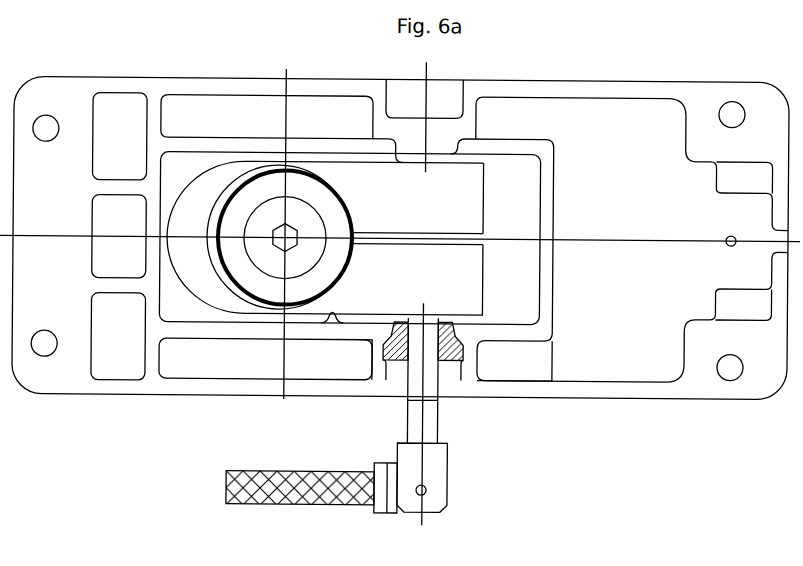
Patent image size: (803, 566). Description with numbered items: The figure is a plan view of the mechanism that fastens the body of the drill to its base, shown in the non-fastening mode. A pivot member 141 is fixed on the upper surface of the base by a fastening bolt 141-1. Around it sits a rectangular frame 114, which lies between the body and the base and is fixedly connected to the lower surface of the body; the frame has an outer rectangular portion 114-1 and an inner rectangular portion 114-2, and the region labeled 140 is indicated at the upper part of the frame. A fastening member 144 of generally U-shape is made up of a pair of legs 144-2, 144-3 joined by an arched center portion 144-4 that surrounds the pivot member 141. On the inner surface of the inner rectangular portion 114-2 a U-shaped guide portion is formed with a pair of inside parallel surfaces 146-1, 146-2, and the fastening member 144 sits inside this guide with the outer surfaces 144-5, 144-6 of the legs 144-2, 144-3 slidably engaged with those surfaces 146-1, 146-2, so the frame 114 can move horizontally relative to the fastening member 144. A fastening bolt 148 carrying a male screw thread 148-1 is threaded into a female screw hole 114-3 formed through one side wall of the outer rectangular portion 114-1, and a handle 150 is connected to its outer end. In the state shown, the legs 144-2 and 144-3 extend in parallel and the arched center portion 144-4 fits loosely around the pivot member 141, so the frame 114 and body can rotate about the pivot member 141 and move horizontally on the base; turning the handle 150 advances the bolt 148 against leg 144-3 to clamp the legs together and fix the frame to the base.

The rectangular frame 114 is at (196, 78).
The outer rectangular portion 114-1 is at (611, 90).
The inner rectangular portion 114-2 is at (193, 341).
The female screw hole 114-3 is at (410, 345).
The recess 140 is at (176, 168).
The pivot member 141 is at (237, 261).
The fastening bolt 141-1 is at (268, 262).
The fastening member 144 is at (363, 152).
The leg 144-2 is at (468, 196).
The leg 144-3 is at (473, 290).
The arched center portion 144-4 is at (250, 172).
The outer surface 144-5 is at (435, 165).
The outer surface 144-6 is at (365, 342).
The inside parallel surface 146-1 is at (313, 167).
The inside parallel surface 146-2 is at (333, 318).
The fastening bolt 148 is at (437, 421).
The male screw thread 148-1 is at (441, 381).
The handle 150 is at (285, 495).